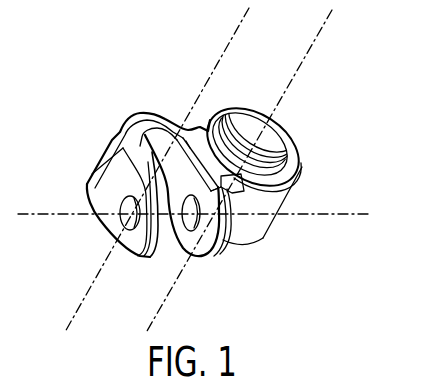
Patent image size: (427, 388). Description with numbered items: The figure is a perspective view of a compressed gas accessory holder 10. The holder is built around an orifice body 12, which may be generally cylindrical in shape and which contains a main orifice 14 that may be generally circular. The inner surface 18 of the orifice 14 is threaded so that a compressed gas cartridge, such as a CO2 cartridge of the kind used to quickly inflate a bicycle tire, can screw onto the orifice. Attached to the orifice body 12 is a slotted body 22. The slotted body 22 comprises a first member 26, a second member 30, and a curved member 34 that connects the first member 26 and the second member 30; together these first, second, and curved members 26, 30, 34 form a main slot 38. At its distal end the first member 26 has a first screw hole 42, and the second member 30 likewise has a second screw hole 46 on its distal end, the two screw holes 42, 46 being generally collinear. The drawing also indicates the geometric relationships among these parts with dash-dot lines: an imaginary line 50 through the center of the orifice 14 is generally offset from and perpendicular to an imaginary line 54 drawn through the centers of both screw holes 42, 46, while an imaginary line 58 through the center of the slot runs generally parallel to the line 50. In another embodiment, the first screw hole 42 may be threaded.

The compressed gas accessory holder 10 is at (77, 72).
The orifice body 12 is at (245, 228).
The main orifice 14 is at (247, 112).
The inner surface 18 is at (276, 128).
The slotted body 22 is at (145, 117).
The first member 26 is at (192, 248).
The second member 30 is at (132, 247).
The curved member 34 is at (133, 123).
The main slot 38 is at (157, 145).
The first screw hole 42 is at (178, 243).
The second screw hole 46 is at (128, 212).
The imaginary line through the center of the orifice 50 is at (311, 50).
The imaginary line through the center of both screw holes 54 is at (318, 214).
The imaginary line through the center of slot 58 is at (230, 42).